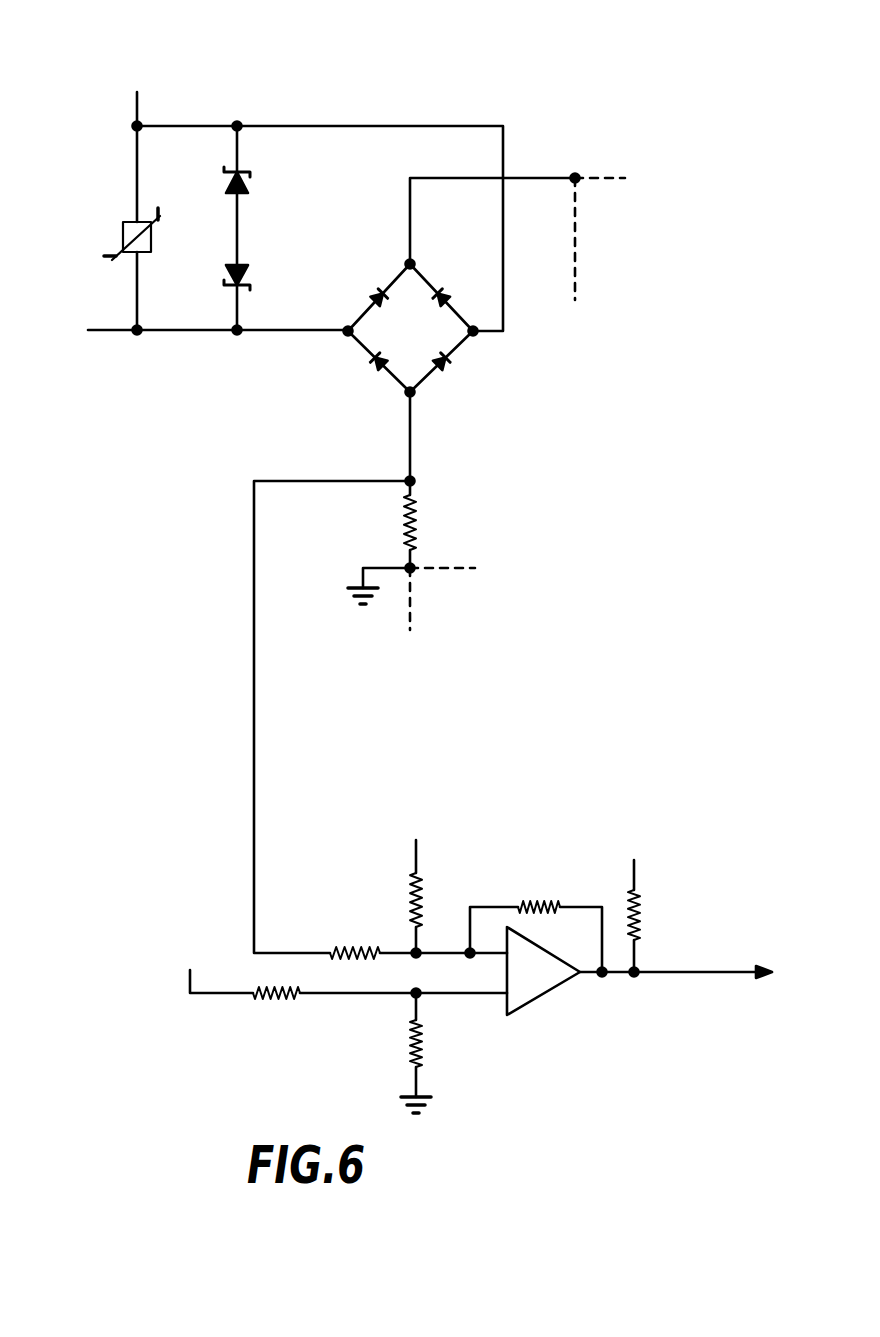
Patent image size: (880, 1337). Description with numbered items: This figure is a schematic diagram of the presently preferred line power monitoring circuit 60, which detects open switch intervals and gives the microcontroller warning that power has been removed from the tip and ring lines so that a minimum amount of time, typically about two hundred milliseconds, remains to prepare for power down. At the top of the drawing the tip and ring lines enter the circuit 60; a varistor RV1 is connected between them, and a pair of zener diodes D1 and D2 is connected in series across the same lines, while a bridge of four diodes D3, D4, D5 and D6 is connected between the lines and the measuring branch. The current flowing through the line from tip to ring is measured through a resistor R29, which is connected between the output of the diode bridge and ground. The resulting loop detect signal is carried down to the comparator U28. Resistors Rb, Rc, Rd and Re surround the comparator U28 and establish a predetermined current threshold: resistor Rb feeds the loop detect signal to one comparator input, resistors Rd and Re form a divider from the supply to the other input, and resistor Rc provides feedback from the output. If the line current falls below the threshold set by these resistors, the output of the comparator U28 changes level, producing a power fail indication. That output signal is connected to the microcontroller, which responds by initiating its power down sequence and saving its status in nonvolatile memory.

The line power monitoring circuit 60 is at (358, 58).
The varistor RV1 is at (150, 242).
The zener diode D1 is at (261, 176).
The zener diode D2 is at (261, 279).
The bridge diode D3 is at (368, 284).
The bridge diode D4 is at (454, 284).
The bridge diode D5 is at (365, 375).
The bridge diode D6 is at (461, 393).
The resistor R29 is at (429, 524).
The resistor Rb is at (356, 949).
The resistor Rc is at (536, 926).
The resistor Rd is at (232, 986).
The resistor Re is at (430, 1053).
The comparator U28 is at (541, 971).